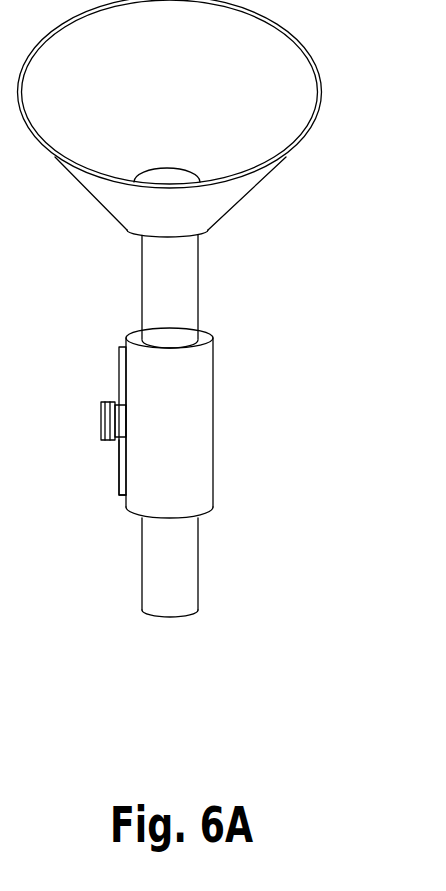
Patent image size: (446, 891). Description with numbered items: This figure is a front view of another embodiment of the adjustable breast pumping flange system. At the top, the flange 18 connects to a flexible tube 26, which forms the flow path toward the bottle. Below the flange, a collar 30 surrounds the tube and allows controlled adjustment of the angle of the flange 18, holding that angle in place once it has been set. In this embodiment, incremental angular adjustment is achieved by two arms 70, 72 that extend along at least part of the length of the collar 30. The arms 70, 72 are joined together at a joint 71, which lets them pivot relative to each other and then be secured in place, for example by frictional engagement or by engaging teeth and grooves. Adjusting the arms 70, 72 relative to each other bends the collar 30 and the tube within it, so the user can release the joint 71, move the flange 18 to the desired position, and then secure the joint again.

The flange 18 is at (322, 80).
The flexible tube 26 is at (198, 270).
The collar 30 is at (198, 387).
The arm 70 is at (119, 372).
The joint 71 is at (101, 412).
The arm 72 is at (119, 472).